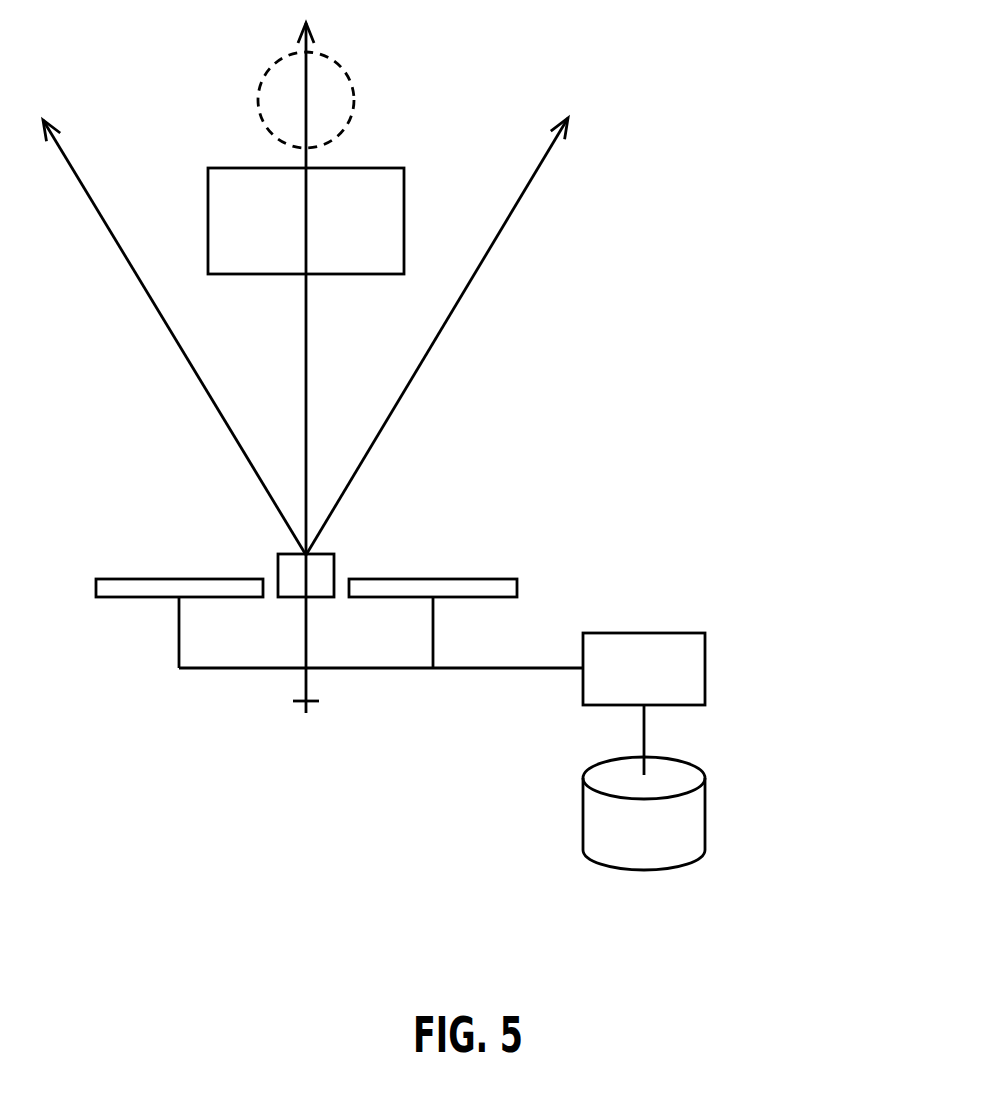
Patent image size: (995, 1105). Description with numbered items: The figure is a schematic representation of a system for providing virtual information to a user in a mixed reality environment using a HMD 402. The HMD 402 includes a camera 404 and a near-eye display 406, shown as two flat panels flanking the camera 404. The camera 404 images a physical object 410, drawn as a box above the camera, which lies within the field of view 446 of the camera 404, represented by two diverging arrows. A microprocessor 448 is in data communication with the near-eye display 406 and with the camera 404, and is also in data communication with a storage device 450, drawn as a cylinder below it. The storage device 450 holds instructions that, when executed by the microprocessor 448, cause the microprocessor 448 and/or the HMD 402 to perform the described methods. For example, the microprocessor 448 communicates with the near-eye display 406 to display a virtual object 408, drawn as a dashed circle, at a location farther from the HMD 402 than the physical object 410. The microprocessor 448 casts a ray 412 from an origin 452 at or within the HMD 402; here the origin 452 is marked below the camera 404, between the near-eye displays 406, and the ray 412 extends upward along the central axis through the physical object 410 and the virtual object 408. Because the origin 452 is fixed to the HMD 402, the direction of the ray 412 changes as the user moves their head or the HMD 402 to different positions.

The HMD 402 is at (780, 408).
The camera 404 is at (334, 557).
The near-eye display 406 is at (132, 597).
The virtual object 408 is at (343, 72).
The physical object 410 is at (404, 188).
The ray 412 is at (306, 347).
The field of view 446 is at (495, 247).
The microprocessor 448 is at (705, 668).
The storage device 450 is at (705, 812).
The origin 452 is at (305, 700).